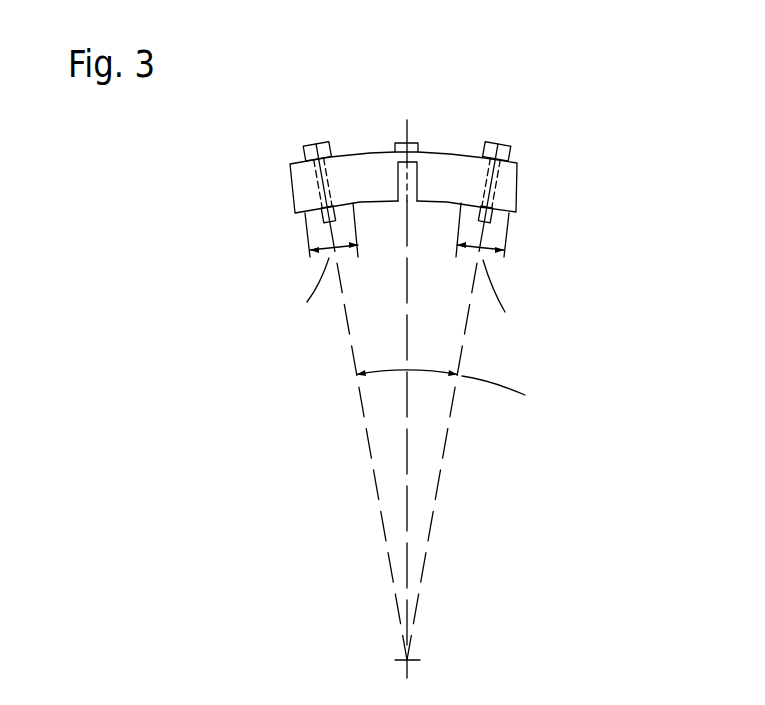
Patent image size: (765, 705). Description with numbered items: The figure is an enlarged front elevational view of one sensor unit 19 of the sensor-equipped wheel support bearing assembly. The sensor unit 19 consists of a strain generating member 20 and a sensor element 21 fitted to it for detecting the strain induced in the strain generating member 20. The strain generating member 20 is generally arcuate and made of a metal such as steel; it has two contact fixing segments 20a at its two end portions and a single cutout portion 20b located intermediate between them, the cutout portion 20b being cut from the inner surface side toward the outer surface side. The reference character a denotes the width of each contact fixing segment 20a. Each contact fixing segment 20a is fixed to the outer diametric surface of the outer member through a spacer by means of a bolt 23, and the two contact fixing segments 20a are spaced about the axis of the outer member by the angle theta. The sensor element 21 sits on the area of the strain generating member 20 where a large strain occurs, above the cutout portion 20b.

The sensor unit 19 is at (548, 113).
The strain generating member 20 is at (452, 153).
The contact fixing segment 20a is at (305, 228).
The cutout portion 20b is at (404, 187).
The sensor element 21 is at (400, 143).
The bolt 23 is at (304, 144).